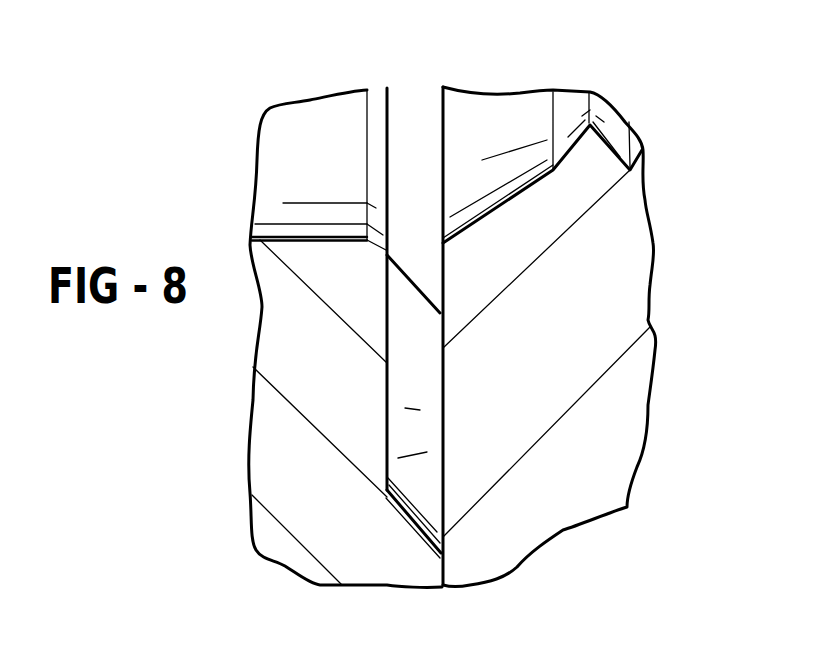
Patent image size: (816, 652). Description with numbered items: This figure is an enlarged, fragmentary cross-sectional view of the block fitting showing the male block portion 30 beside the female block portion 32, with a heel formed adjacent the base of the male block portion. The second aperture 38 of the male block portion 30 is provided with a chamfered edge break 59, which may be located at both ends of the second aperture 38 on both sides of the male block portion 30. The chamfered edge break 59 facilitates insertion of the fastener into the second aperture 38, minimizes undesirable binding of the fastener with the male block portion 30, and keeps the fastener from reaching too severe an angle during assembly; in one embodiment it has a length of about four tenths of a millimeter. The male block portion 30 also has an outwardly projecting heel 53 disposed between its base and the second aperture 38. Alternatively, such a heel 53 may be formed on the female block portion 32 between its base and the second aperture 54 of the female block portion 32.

The male block portion 30 is at (334, 394).
The female block portion 32 is at (555, 394).
The second aperture 38 is at (317, 164).
The second aperture of the female block portion 54 is at (514, 149).
The chamfered edge break 59 is at (389, 251).
The heel 53 is at (443, 562).